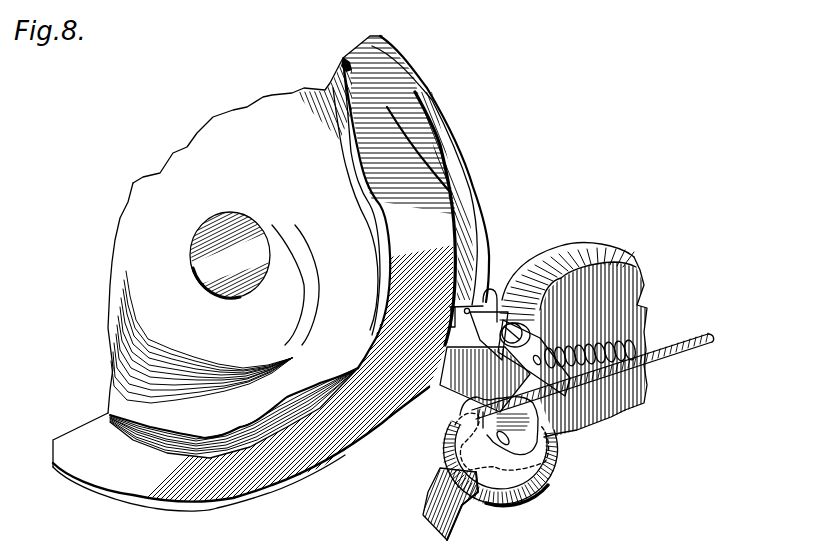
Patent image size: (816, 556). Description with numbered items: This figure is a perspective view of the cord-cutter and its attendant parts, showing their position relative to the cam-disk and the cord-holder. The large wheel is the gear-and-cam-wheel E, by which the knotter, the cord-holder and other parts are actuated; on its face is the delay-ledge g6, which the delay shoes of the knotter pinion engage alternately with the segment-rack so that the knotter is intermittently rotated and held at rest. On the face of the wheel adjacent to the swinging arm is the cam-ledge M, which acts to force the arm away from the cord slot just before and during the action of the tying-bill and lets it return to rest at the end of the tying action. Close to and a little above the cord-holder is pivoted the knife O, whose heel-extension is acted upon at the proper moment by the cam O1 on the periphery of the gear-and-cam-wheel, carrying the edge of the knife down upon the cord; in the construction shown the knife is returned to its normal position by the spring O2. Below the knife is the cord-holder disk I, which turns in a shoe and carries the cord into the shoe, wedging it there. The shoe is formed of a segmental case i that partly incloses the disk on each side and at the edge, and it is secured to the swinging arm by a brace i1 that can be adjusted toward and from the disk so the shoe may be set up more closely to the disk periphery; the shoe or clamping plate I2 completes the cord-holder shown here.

The delay-ledge g6 is at (413, 72).
The cam O1 is at (459, 163).
The gear-and-cam-wheel E is at (296, 256).
The cam-ledge M is at (379, 373).
The knife O is at (505, 409).
The spring O2 is at (644, 337).
The cord-holder disk I is at (499, 426).
The segmental case i is at (500, 459).
The brace i1 is at (463, 506).
The cup rim I2 is at (524, 503).